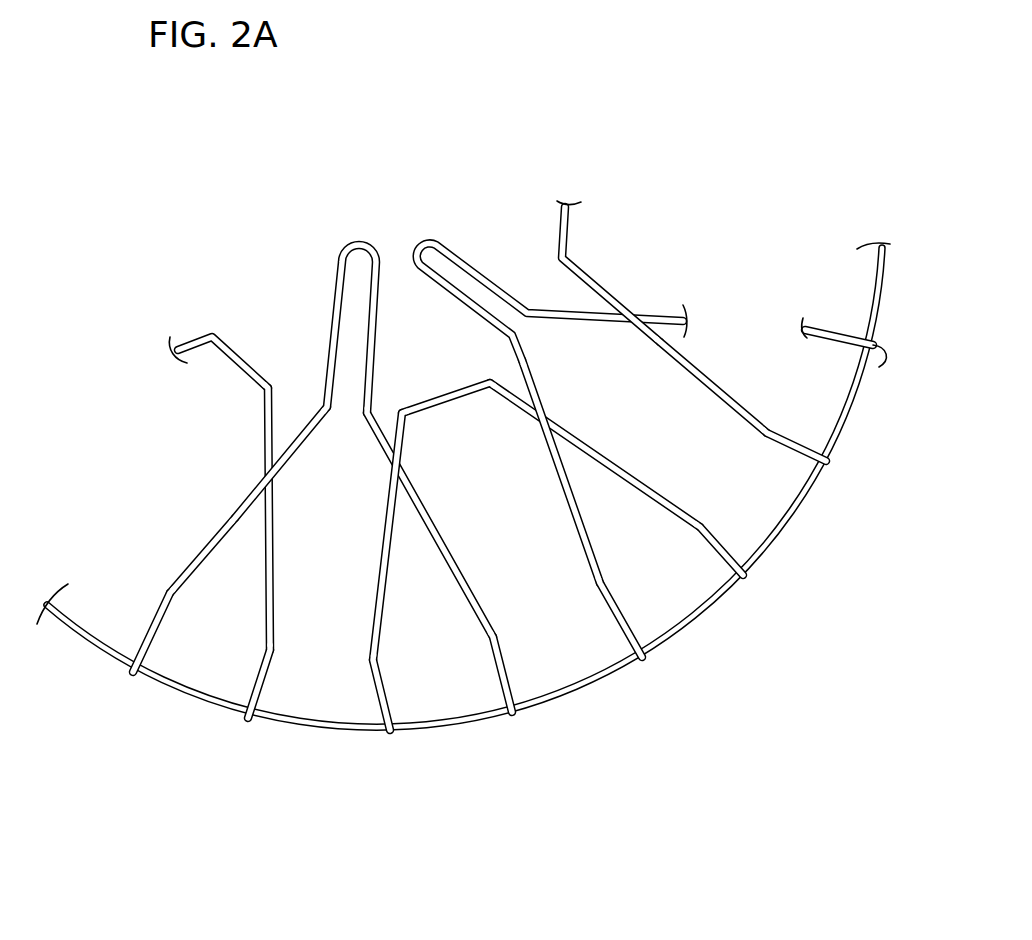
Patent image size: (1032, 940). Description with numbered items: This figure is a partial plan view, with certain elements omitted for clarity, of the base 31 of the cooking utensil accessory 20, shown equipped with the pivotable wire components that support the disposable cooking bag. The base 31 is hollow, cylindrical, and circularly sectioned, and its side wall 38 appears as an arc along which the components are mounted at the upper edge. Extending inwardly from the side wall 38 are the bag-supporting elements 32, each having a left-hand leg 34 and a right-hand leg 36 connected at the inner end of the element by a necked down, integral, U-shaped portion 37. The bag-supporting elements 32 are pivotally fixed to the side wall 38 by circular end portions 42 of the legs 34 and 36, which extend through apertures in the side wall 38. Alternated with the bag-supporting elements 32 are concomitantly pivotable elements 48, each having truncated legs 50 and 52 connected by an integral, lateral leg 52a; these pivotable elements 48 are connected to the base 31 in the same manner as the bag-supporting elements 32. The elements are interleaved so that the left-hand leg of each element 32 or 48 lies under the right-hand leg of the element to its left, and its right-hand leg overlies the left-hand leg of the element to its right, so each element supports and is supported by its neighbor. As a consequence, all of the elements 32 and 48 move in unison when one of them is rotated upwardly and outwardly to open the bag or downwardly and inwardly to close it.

The cooking utensil accessory 20 is at (590, 125).
The base 31 is at (726, 665).
The bag-supporting element 32 is at (203, 543).
The left-hand leg 34 is at (224, 540).
The right-hand leg 36 is at (452, 578).
The U-shaped portion 37 is at (338, 266).
The side wall 38 is at (782, 530).
The circular end portion 42 is at (880, 358).
The pivotable element 48 is at (592, 257).
The truncated leg 50 is at (680, 362).
The truncated leg 52 is at (273, 495).
The lateral leg 52a is at (236, 350).